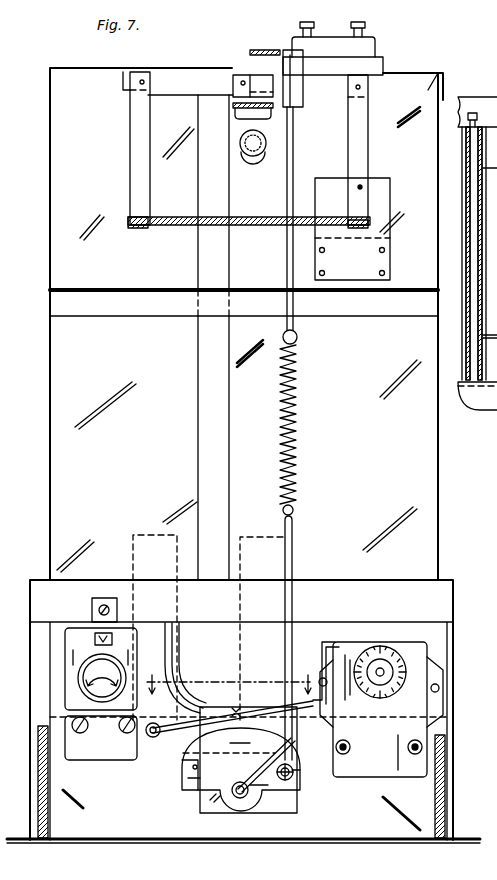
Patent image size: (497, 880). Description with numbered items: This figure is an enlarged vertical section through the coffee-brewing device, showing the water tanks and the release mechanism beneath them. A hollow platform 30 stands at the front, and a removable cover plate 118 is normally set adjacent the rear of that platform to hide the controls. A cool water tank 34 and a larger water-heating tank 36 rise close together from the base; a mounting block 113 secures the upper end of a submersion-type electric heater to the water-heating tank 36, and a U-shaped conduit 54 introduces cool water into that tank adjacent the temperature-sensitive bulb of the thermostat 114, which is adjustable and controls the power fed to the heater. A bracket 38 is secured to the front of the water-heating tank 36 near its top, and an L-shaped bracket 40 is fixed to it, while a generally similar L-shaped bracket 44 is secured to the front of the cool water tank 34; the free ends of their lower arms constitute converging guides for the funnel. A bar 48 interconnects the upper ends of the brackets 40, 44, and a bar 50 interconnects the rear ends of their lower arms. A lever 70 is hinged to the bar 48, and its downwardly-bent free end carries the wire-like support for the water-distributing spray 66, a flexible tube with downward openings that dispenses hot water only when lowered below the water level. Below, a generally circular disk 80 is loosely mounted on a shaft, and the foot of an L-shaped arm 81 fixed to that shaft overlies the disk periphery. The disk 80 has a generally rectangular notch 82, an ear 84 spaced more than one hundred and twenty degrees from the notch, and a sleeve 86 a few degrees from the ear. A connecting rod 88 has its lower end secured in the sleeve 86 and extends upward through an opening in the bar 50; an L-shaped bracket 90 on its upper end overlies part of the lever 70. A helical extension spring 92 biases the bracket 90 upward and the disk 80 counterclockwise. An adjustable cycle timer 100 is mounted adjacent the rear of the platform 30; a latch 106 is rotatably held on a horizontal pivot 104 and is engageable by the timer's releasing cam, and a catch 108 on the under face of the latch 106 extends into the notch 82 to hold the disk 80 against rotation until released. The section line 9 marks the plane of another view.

The platform 30 is at (447, 795).
The cool water tank 34 is at (65, 128).
The water-heating tank 36 is at (428, 90).
The bracket 38 is at (385, 235).
The L-shaped bracket 40 is at (365, 138).
The L-shaped bracket 44 is at (135, 142).
The bar 48 is at (176, 78).
The bar 50 is at (180, 227).
The U-shaped conduit 54 is at (150, 535).
The water-distributing spray 66 is at (268, 152).
The lever 70 is at (250, 72).
The disk 80 is at (192, 797).
The L-shaped arm 81 is at (272, 778).
The notch 82 is at (208, 748).
The ear 84 is at (300, 770).
The sleeve 86 is at (310, 795).
The connecting rod 88 is at (297, 310).
The L-shaped bracket 90 is at (270, 50).
The helical extension spring 92 is at (297, 452).
The section line 9- 9 is at (229, 676).
The adjustable cycle timer 100 is at (415, 658).
The pivot 104 is at (153, 738).
The latch 106 is at (268, 710).
The catch 108 is at (235, 712).
The mounting block 113 is at (333, 38).
The thermostat 114 is at (65, 680).
The removable cover plate 118 is at (60, 290).